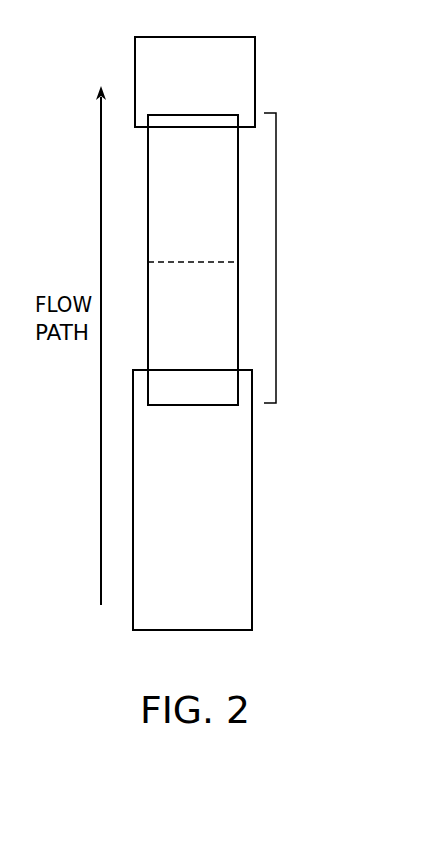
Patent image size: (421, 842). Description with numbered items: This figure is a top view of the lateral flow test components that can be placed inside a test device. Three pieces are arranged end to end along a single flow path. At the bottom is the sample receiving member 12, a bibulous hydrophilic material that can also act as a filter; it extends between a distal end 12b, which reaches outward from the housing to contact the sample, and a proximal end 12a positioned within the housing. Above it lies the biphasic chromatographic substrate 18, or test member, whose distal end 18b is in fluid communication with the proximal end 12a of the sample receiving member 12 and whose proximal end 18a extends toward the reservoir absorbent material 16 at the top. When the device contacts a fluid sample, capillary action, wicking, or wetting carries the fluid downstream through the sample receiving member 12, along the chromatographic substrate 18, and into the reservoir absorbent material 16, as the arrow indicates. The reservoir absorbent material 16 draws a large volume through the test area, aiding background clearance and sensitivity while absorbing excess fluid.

The sample receiving member 12 is at (242, 523).
The proximal end 12a is at (229, 423).
The distal end 12b is at (233, 603).
The reservoir absorbent material 16 is at (245, 82).
The biphasic chromatographic substrate 18 is at (276, 259).
The proximal end 18a is at (216, 141).
The distal end 18b is at (223, 357).